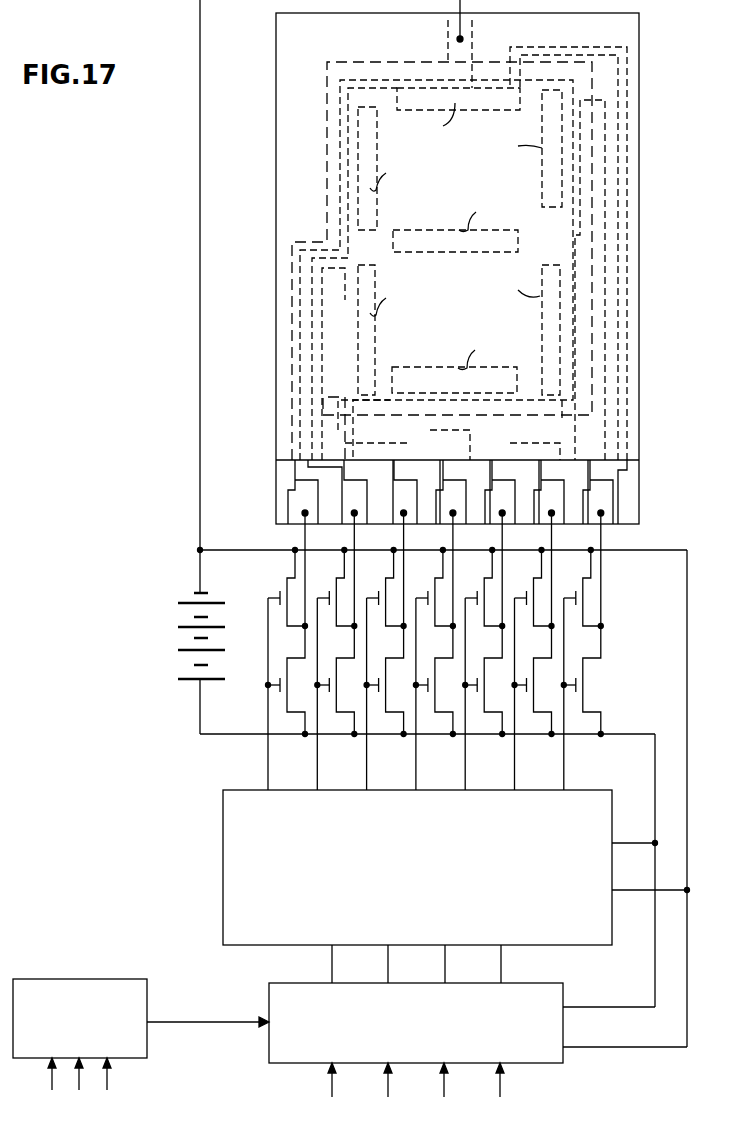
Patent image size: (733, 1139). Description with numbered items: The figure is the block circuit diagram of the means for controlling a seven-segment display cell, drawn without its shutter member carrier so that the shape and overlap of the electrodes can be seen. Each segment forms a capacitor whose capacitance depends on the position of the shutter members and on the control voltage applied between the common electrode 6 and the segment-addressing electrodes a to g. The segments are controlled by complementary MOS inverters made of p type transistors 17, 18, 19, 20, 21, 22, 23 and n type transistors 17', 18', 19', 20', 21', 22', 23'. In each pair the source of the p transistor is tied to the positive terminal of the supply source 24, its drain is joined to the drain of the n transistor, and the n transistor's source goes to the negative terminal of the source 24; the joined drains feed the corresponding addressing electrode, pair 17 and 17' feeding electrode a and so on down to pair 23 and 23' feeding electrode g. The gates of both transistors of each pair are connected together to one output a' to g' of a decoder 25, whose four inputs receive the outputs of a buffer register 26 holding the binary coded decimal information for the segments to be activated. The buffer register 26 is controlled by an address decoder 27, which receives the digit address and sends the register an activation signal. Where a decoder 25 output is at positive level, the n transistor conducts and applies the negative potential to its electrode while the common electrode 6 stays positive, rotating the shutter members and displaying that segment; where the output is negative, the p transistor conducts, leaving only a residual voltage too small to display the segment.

The common electrode 6 is at (573, 90).
The p type transistor 17 is at (578, 587).
The p type transistor 18 is at (529, 587).
The p type transistor 19 is at (479, 587).
The p type transistor 20 is at (430, 587).
The p type transistor 21 is at (381, 587).
The p type transistor 22 is at (282, 587).
The p type transistor 23 is at (331, 587).
The n type transistor 17' is at (586, 680).
The n type transistor 18' is at (537, 680).
The n type transistor 19' is at (488, 680).
The n type transistor 20' is at (438, 680).
The n type transistor 21' is at (389, 680).
The n type transistor 22' is at (291, 680).
The n type transistor 23' is at (340, 680).
The supply source 24 is at (172, 632).
The decoder 25 is at (223, 823).
The buffer register 26 is at (552, 983).
The address decoder 27 is at (72, 979).